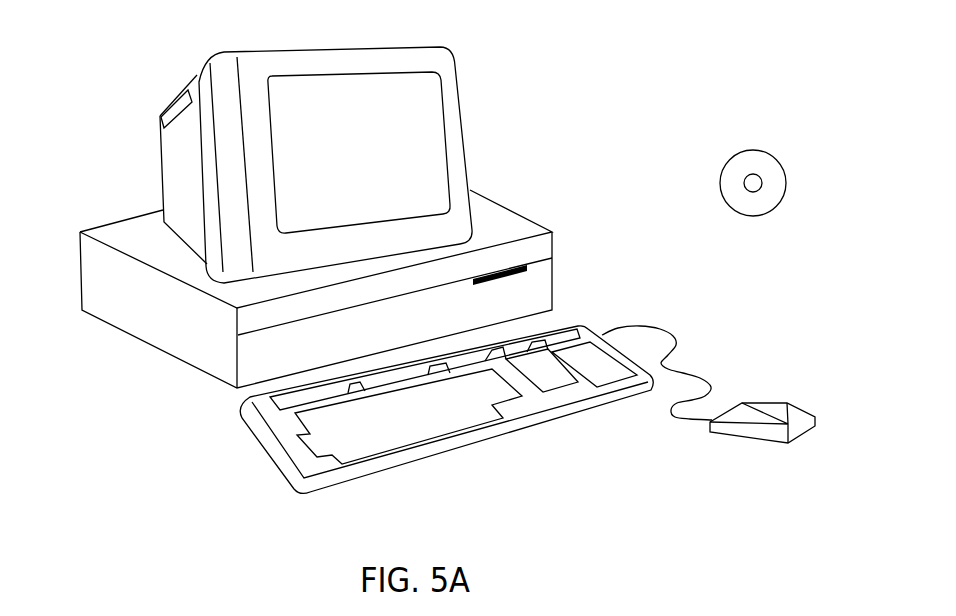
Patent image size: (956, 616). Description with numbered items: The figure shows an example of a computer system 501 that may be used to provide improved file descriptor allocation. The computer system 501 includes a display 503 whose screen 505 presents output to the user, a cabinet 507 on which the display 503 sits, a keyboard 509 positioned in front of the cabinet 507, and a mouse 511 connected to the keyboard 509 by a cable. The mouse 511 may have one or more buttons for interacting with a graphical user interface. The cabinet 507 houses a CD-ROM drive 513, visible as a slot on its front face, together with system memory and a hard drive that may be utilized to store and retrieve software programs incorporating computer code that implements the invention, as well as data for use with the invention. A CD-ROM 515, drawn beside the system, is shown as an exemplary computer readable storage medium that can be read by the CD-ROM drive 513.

The computer system 501 is at (672, 24).
The display 503 is at (468, 162).
The screen 505 is at (425, 115).
The cabinet 507 is at (197, 371).
The keyboard 509 is at (452, 453).
The mouse 511 is at (805, 405).
The CD-ROM drive 513 is at (527, 263).
The CD-ROM 515 is at (772, 150).